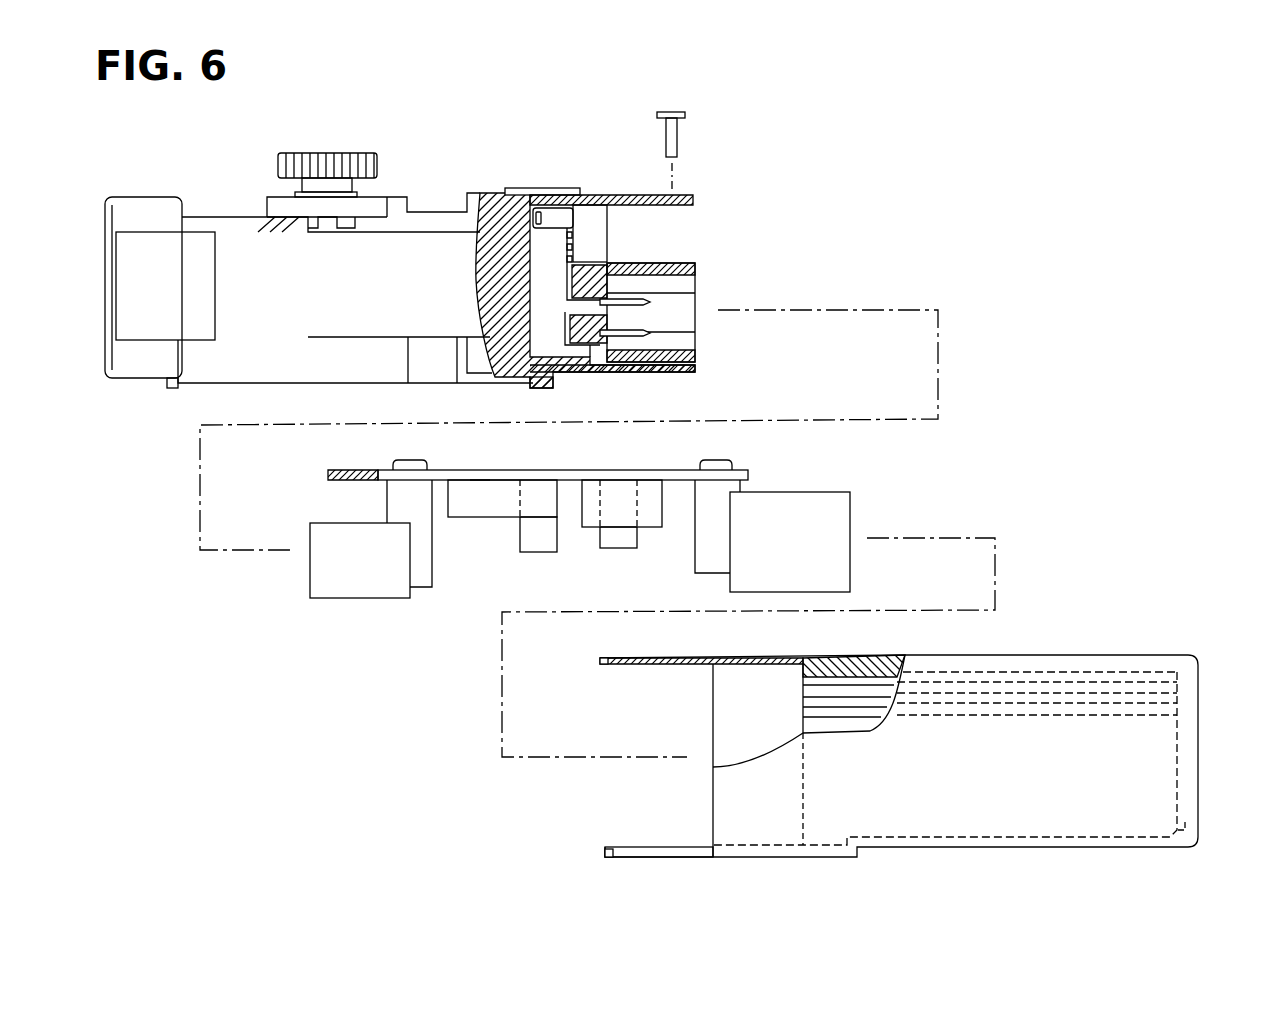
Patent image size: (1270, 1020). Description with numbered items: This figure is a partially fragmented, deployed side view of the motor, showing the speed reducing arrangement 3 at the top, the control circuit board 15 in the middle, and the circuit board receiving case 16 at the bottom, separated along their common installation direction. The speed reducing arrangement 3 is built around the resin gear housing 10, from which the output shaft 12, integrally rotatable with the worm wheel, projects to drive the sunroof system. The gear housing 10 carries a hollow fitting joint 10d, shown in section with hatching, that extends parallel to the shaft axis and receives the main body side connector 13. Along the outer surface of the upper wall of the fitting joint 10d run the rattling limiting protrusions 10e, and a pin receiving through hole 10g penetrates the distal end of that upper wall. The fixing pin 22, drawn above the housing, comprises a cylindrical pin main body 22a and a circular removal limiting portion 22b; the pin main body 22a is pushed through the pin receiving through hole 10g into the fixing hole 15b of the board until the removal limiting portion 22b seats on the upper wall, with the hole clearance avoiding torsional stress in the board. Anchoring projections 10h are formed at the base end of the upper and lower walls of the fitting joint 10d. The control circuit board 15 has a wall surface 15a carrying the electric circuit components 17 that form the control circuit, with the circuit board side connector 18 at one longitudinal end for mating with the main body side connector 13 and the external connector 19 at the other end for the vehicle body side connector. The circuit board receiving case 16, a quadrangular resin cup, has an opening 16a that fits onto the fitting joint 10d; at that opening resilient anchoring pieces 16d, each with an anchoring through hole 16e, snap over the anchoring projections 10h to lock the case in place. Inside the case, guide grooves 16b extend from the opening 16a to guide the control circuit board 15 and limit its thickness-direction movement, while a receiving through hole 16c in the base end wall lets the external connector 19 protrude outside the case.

The speed reducing arrangement 3 is at (145, 195).
The gear housing 10 is at (195, 381).
The fitting joint 10d is at (662, 374).
The rattling limiting protrusions 10e is at (614, 195).
The pin receiving through hole 10g is at (688, 205).
The anchoring projection 10h is at (539, 189).
The output shaft 12 is at (334, 158).
The main body side connector 13 is at (688, 264).
The control circuit board 15 is at (748, 474).
The wall surface 15a is at (484, 488).
The fixing hole 15b is at (356, 470).
The circuit board receiving case 16 is at (1110, 655).
The opening 16a is at (718, 668).
The guide grooves 16b is at (805, 698).
The receiving through hole 16c is at (1196, 714).
The anchoring pieces 16d is at (601, 662).
The anchoring through hole 16e is at (623, 658).
The electric circuit components 17 is at (493, 510).
The circuit board side connector 18 is at (318, 582).
The external connector 19 is at (845, 572).
The fixing pin 22 is at (726, 146).
The pin main body 22a is at (678, 141).
The removal limiting portion 22b is at (685, 115).